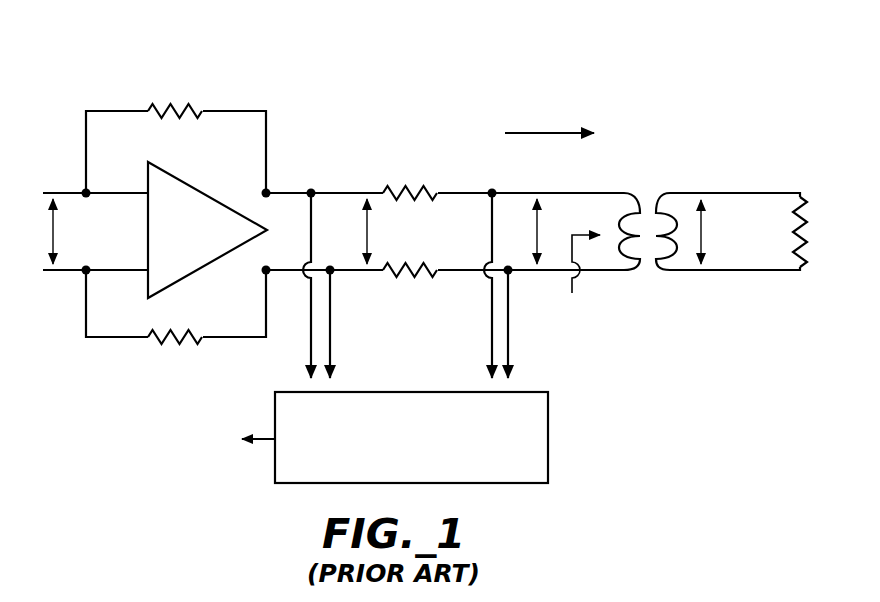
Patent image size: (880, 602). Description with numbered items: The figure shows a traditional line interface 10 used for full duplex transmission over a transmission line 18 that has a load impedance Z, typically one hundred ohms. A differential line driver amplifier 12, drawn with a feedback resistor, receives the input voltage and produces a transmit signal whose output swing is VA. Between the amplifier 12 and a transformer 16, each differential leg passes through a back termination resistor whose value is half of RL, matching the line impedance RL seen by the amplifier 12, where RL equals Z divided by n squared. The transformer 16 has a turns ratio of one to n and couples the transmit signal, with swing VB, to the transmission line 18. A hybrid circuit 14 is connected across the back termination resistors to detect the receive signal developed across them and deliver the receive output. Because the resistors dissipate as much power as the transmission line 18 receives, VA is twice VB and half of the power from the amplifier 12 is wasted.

The line interface 10 is at (419, 66).
The line driver amplifier 12 is at (242, 99).
The hybrid circuit 14 is at (549, 437).
The transformer 16 is at (644, 160).
The transmission line 18 is at (748, 183).